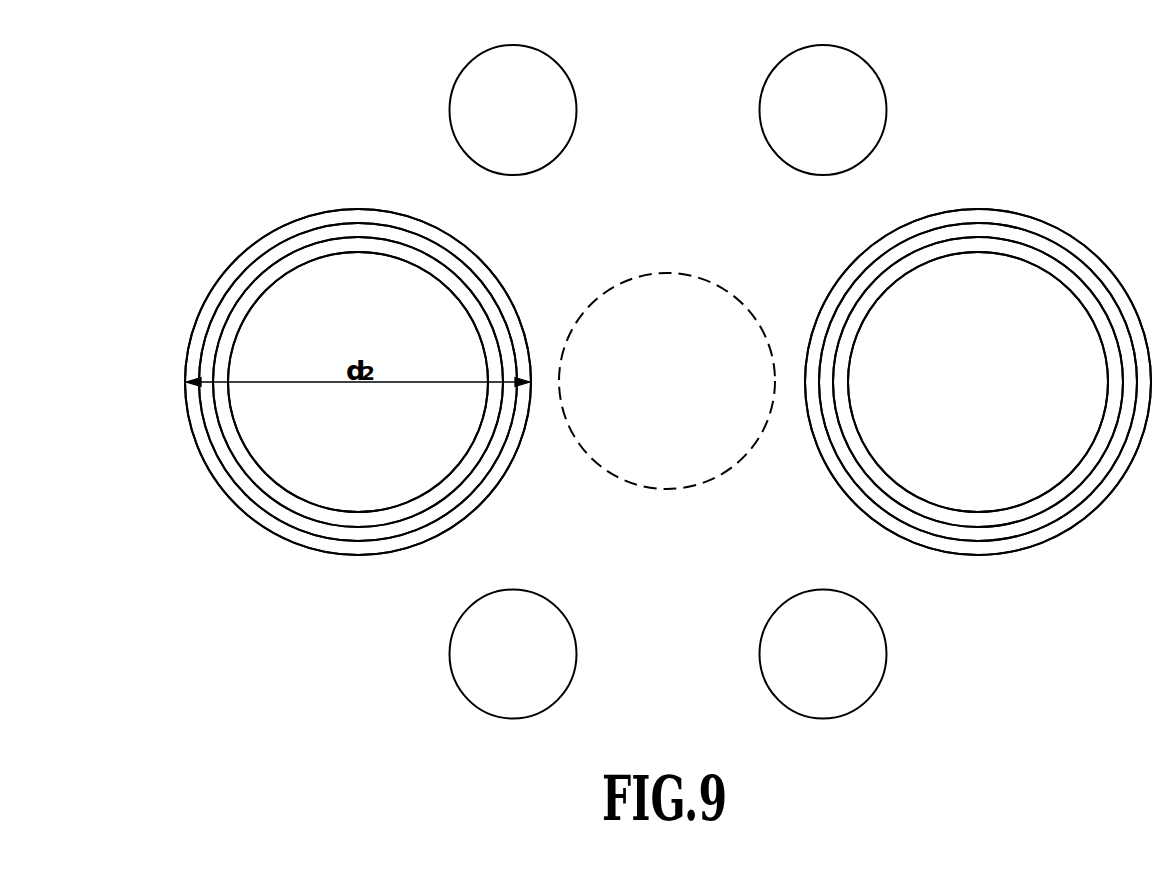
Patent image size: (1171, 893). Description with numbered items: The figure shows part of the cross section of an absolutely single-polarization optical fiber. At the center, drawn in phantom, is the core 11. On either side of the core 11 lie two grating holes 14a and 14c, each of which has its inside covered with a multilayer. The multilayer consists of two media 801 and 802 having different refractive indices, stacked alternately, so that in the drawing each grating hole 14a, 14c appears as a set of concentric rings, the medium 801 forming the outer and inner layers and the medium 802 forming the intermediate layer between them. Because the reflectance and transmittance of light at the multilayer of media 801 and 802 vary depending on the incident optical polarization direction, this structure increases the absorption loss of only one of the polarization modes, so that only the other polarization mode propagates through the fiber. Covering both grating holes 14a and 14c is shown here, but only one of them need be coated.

The grating hole 14c is at (222, 273).
The grating hole 14a is at (953, 208).
The medium 801 is at (340, 208).
The medium 802 is at (437, 252).
The core 11 is at (665, 272).